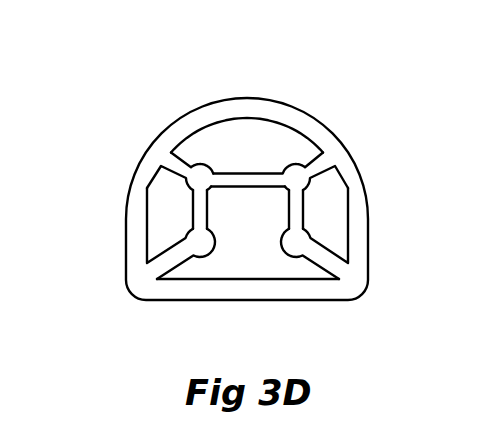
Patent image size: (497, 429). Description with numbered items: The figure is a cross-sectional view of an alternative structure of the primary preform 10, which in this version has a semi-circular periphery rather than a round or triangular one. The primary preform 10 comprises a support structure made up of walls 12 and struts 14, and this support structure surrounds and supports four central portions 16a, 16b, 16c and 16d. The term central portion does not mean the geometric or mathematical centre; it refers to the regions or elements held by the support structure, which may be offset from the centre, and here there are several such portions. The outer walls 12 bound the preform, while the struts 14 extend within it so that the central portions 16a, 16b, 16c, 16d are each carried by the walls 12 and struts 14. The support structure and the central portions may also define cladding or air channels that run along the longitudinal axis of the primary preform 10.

The primary preform 10 is at (167, 86).
The walls 12 is at (307, 127).
The struts 14 is at (325, 258).
The central portion 16a is at (197, 179).
The central portion 16b is at (200, 241).
The central portion 16c is at (297, 241).
The central portion 16d is at (298, 180).